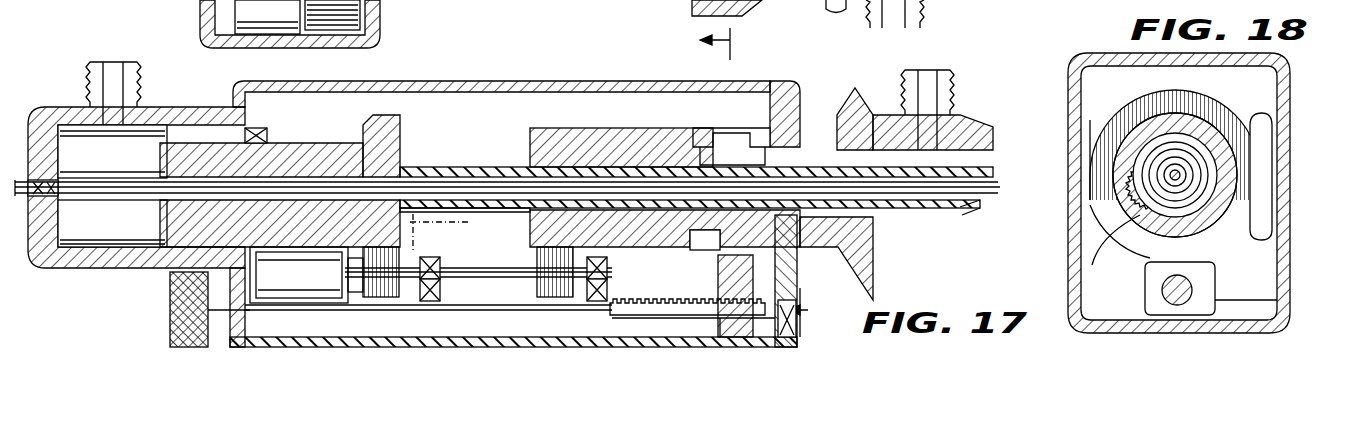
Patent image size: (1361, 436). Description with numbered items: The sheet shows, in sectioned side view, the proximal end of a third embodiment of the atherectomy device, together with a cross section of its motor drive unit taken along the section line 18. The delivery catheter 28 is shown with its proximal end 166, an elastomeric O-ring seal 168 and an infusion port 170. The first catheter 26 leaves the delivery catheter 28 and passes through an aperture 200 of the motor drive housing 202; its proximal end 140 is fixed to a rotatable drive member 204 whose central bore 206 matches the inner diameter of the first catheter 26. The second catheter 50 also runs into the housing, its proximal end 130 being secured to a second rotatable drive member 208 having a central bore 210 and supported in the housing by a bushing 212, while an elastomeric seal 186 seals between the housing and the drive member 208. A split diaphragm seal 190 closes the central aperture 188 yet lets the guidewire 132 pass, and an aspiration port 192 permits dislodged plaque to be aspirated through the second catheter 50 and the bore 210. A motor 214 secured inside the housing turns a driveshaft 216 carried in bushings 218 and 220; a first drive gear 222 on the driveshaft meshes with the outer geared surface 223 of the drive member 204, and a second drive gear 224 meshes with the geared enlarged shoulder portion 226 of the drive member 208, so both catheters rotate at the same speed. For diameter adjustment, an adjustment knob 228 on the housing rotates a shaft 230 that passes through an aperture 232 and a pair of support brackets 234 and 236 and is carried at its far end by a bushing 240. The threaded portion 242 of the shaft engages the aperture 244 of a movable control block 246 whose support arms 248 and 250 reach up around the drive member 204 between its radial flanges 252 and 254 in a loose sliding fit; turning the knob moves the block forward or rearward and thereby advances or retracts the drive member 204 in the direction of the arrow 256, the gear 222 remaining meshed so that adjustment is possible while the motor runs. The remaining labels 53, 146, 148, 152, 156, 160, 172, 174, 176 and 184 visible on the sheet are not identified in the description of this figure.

In FIG. 17, the section line 18 is at (773, 182).
In FIG. 17, the first catheter 26 is at (990, 140).
In FIG. 17, the delivery catheter 28 is at (960, 115).
In FIG. 17, the second catheter 50 is at (993, 170).
In FIG. 17, the lower tube wall 53 is at (980, 204).
In FIG. 17, the proximal end of second catheter 130 is at (330, 160).
In FIG. 17, the guidewire 132 is at (998, 187).
In FIG. 17, the proximal end of first catheter 140 is at (675, 160).
In FIG. 17, the component 146 is at (590, 0).
In FIG. 17, the component 148 is at (506, 26).
In FIG. 17, the component 152 is at (507, 38).
In FIG. 17, the component 156 is at (608, 0).
In FIG. 17, the component 160 is at (762, 6).
In FIG. 17, the proximal end of delivery catheter 166 is at (858, 112).
In FIG. 17, the elastomeric O-ring seal 168 is at (845, 135).
In FIG. 17, the infusion port 170 is at (945, 80).
In FIG. 17, the housing 172 is at (200, 2).
In FIG. 17, the motor 174 is at (278, 14).
In FIG. 17, the housing wall 176 is at (381, 30).
In FIG. 17, the gear 184 is at (380, 10).
In FIG. 17, the elastomeric seal 186 is at (160, 140).
In FIG. 17, the central aperture 188 is at (66, 235).
In FIG. 17, the split diaphragm seal 190 is at (44, 135).
In FIG. 17, the aspiration port 192 is at (113, 60).
In FIG. 17, the aperture 200 is at (820, 250).
In FIG. 17, the motor drive housing 202 is at (512, 335).
In FIG. 18, the motor drive housing 202 is at (1290, 195).
In FIG. 17, the rotatable drive member 204 is at (530, 150).
In FIG. 18, the rotatable drive member 204 is at (1092, 262).
In FIG. 17, the central bore 206 is at (600, 160).
In FIG. 17, the second rotatable drive member 208 is at (350, 128).
In FIG. 17, the central bore 210 is at (312, 143).
In FIG. 17, the bushing 212 is at (262, 235).
In FIG. 17, the motor 214 is at (322, 282).
In FIG. 17, the driveshaft 216 is at (470, 274).
In FIG. 17, the bushing 218 is at (445, 270).
In FIG. 17, the bushing 220 is at (620, 250).
In FIG. 17, the first drive gear 222 is at (560, 260).
In FIG. 17, the outer geared surface 223 is at (540, 238).
In FIG. 18, the outer geared surface 223 is at (1135, 232).
In FIG. 17, the second drive gear 224 is at (375, 247).
In FIG. 17, the enlarged shoulder portion 226 is at (400, 128).
In FIG. 17, the adjustment knob 228 is at (170, 292).
In FIG. 17, the shaft 230 is at (350, 314).
In FIG. 17, the aperture 232 is at (250, 326).
In FIG. 17, the support bracket 234 is at (445, 312).
In FIG. 17, the support bracket 236 is at (628, 300).
In FIG. 17, the bushing 240 is at (800, 315).
In FIG. 17, the threaded portion 242 is at (690, 258).
In FIG. 18, the threaded portion 242 is at (1192, 290).
In FIG. 17, the aperture 244 is at (725, 330).
In FIG. 18, the aperture 244 is at (1250, 300).
In FIG. 17, the control block 246 is at (700, 250).
In FIG. 18, the control block 246 is at (1160, 288).
In FIG. 17, the support arm 248 is at (735, 140).
In FIG. 18, the support arm 248 is at (1272, 120).
In FIG. 18, the support arm 250 is at (1100, 120).
In FIG. 17, the radial flange 252 is at (705, 128).
In FIG. 18, the radial flange 252 is at (1240, 100).
In FIG. 17, the radial flange 254 is at (782, 82).
In FIG. 17, the directional arrow 256 is at (462, 238).